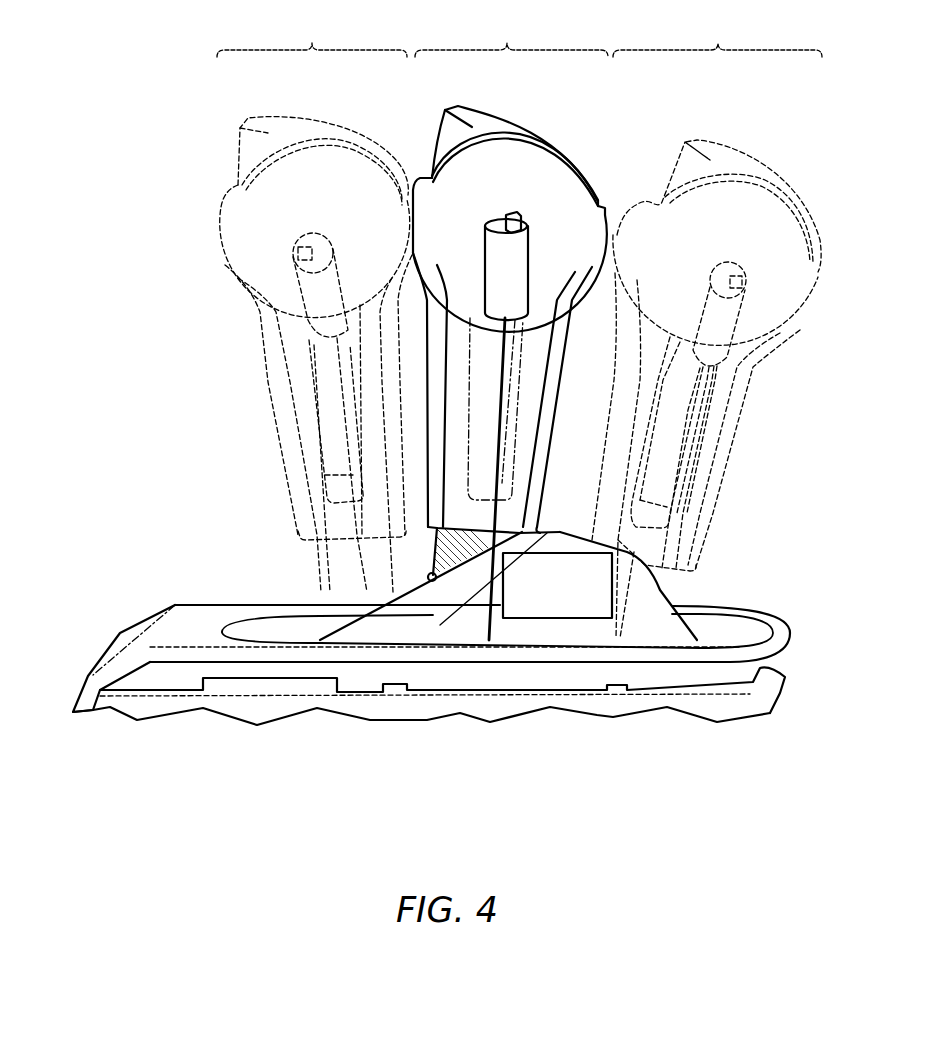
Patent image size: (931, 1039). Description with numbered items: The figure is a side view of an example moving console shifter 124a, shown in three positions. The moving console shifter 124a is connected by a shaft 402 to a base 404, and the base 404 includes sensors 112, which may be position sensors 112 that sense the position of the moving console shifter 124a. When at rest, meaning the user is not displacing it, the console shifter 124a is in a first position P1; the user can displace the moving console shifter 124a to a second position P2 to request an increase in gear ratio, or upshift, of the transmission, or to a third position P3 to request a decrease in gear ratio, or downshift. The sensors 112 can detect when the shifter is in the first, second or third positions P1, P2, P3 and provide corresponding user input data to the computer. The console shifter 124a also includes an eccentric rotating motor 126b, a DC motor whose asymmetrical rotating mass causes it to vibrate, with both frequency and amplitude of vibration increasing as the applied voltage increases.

The moving console shifter 124a is at (542, 142).
The eccentric rotating motor 126b is at (515, 255).
The sensors 112 is at (548, 611).
The shaft 402 is at (437, 540).
The base 404 is at (567, 630).
The first position P1 is at (509, 28).
The second position P2 is at (312, 28).
The third position P3 is at (719, 28).